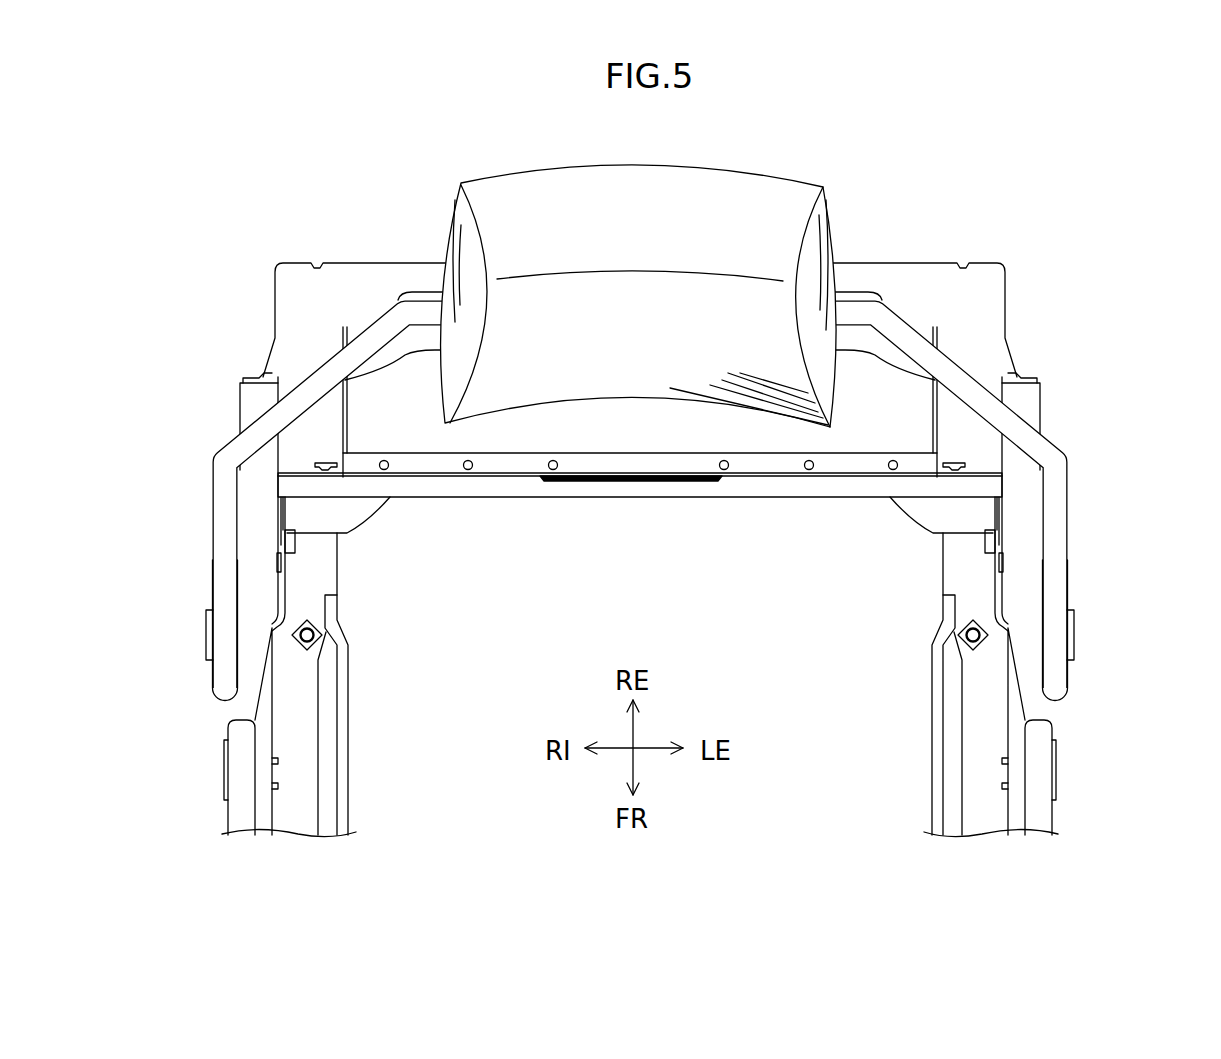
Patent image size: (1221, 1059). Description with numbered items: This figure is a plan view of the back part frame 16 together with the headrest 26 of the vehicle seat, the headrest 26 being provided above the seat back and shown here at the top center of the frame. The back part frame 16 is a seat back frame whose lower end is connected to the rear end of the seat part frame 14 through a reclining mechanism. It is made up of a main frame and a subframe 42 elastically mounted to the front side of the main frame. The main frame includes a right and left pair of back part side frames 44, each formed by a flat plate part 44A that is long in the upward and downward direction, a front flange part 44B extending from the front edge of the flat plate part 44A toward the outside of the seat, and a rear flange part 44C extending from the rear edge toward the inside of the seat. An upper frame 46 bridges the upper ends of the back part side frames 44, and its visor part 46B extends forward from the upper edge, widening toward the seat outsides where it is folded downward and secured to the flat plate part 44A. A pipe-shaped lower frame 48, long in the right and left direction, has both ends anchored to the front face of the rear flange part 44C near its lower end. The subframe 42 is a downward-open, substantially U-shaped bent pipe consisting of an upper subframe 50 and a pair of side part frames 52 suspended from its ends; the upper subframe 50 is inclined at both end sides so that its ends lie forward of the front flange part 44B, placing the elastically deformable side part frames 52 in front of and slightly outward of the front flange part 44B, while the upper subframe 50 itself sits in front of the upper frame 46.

The seat part frame 14 is at (1069, 823).
The back part frame 16 is at (708, 340).
The headrest 26 is at (723, 178).
The subframe 42 is at (665, 496).
The back part side frame 44 is at (562, 474).
The flat plate part 44A is at (263, 373).
The front flange part 44B is at (250, 408).
The rear flange part 44C is at (306, 358).
The upper frame 46 is at (1013, 261).
The visor part 46B is at (335, 270).
The lower frame 48 is at (641, 498).
The upper subframe 50 is at (418, 352).
The side part frame 52 is at (217, 597).